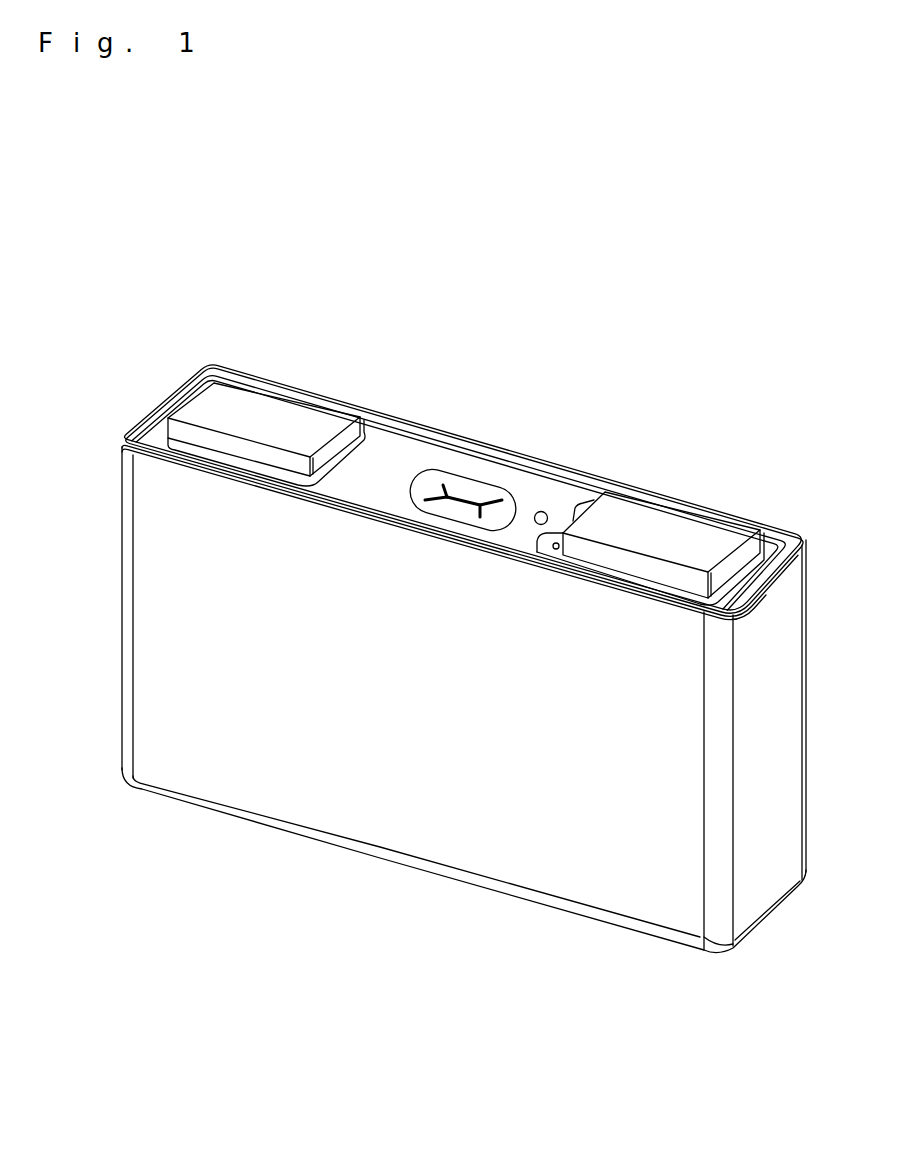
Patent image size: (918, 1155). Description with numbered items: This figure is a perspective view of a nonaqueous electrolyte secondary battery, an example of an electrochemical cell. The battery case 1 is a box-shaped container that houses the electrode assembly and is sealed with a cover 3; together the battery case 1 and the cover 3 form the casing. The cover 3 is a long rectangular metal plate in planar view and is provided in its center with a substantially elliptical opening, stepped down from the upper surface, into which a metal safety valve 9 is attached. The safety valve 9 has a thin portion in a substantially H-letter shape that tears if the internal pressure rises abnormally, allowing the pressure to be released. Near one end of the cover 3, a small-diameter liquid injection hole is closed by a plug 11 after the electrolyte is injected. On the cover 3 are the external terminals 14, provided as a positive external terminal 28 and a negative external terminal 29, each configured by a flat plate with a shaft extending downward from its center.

The battery case 1 is at (437, 826).
The cover 3 is at (413, 452).
The safety valve 9 is at (477, 490).
The plug 11 is at (543, 507).
The external terminals 14 is at (466, 453).
The positive external terminal 28 is at (248, 397).
The negative external terminal 29 is at (630, 507).